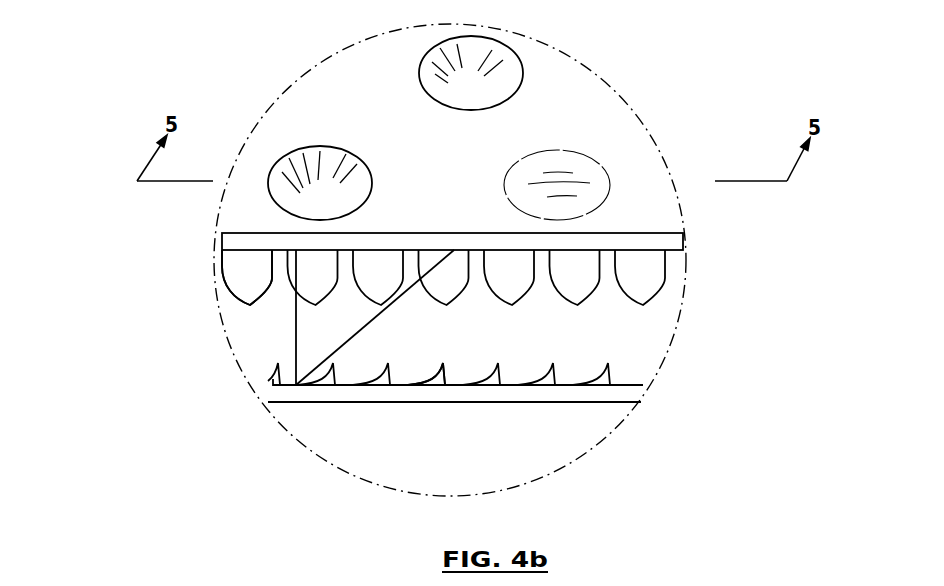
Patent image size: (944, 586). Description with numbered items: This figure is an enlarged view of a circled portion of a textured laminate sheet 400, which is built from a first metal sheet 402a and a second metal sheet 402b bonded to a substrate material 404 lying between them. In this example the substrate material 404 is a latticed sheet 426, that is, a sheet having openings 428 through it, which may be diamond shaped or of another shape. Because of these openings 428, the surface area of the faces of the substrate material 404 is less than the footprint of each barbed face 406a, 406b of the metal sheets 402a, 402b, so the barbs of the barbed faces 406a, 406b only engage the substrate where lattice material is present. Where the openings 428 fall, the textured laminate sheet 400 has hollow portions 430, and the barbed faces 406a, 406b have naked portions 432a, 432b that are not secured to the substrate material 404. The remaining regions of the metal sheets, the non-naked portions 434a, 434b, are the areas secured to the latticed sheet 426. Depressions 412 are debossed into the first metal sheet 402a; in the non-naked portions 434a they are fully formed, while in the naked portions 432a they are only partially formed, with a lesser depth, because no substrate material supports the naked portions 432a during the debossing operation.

The textured laminate sheet 400 is at (712, 212).
The first metal sheet 402a is at (405, 202).
The second metal sheet 402b is at (451, 445).
The substrate material 404 is at (257, 352).
The first barbed face 406a is at (230, 257).
The second barbed face 406b is at (618, 380).
The depressions 412 is at (416, 94).
The latticed sheet 426 is at (258, 337).
The openings 428 is at (412, 362).
The hollow portions 430 is at (382, 450).
The first naked portions 432a is at (270, 294).
The second naked portions 432b is at (566, 382).
The first non-naked portions 434a is at (258, 252).
The second non-naked portions 434b is at (256, 384).